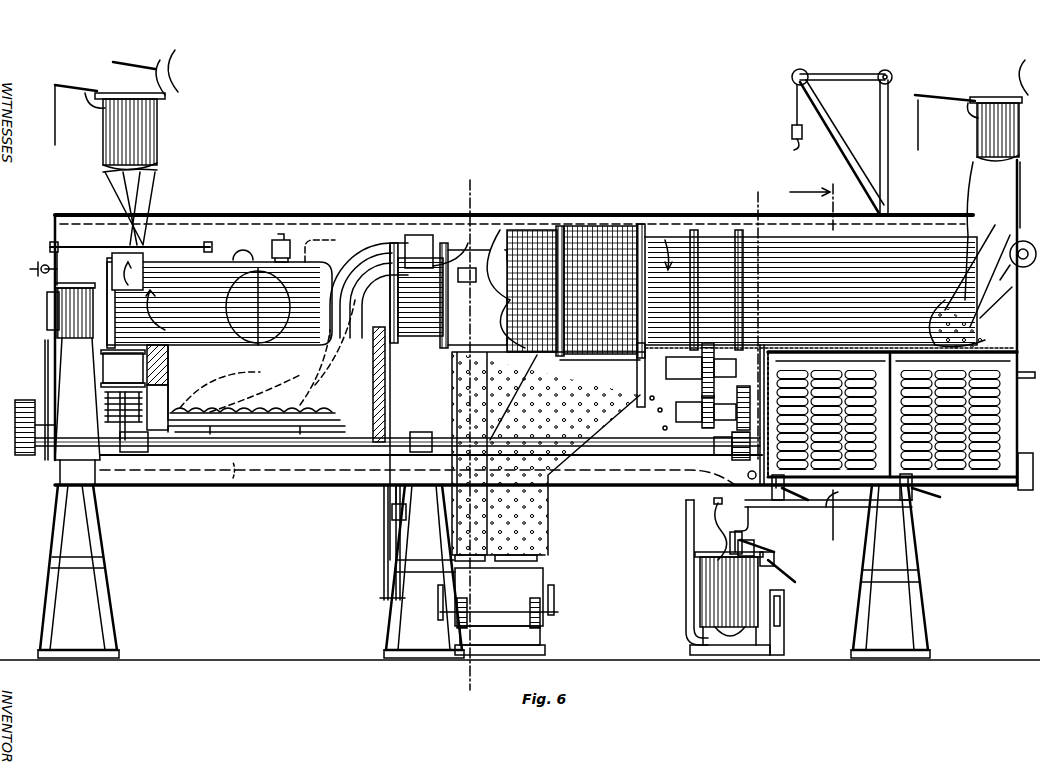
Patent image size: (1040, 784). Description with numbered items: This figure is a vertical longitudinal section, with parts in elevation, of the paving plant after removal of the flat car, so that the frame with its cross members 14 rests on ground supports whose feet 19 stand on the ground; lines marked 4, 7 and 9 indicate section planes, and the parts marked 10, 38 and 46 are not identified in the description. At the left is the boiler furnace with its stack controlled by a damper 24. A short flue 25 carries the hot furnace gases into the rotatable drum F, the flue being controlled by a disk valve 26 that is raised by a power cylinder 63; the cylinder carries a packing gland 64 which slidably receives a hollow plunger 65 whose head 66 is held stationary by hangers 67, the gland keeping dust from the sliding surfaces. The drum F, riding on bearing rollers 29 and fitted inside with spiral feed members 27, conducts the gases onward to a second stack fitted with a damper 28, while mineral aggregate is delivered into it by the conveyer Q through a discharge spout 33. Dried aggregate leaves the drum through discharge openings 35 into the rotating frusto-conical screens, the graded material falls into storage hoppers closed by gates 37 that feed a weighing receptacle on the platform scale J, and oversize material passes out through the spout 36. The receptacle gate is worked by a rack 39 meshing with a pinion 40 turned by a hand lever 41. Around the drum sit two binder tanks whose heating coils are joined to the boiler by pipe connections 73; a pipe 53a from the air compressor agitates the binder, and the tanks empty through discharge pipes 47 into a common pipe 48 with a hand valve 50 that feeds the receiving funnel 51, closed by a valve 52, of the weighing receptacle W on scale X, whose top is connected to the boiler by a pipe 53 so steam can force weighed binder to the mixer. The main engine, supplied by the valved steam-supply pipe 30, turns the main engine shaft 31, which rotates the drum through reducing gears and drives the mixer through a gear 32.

The section line 4 is at (478, 176).
The section line 7 is at (811, 361).
The section line 9 is at (753, 316).
The gear 10 is at (748, 462).
The cross members 14 is at (94, 464).
The foot 19 is at (432, 660).
The damper 24 is at (130, 66).
The short flue 25 is at (506, 205).
The disk valve 26 is at (398, 248).
The spiral feed members 27 is at (996, 315).
The damper 28 is at (1004, 97).
The bearing rollers 29 is at (730, 348).
The valved steam-supply pipe 30 is at (176, 247).
The main engine shaft 31 is at (365, 446).
The gear 32 is at (700, 388).
The discharge spout 33 is at (978, 295).
The discharge openings 35 is at (415, 385).
The spout 36 is at (644, 406).
The gates 37 is at (452, 560).
The base plate 38 is at (548, 638).
The rack 39 is at (540, 626).
The pinion 40 is at (548, 612).
The hand lever 41 is at (554, 596).
The air inlet 46 is at (696, 215).
The discharge pipes 47 is at (830, 480).
The common pipe 48 is at (866, 533).
The hand valve 50 is at (760, 533).
The receiving funnel 51 is at (738, 545).
The valve 52 is at (782, 562).
The pipe 53 is at (712, 504).
The pipe 53a is at (238, 487).
The power cylinder 63 is at (392, 402).
The packing gland 64 is at (405, 512).
The hollow plunger 65 is at (396, 545).
The head 66 is at (380, 588).
The hangers 67 is at (384, 532).
The pipe connections 73 is at (305, 238).